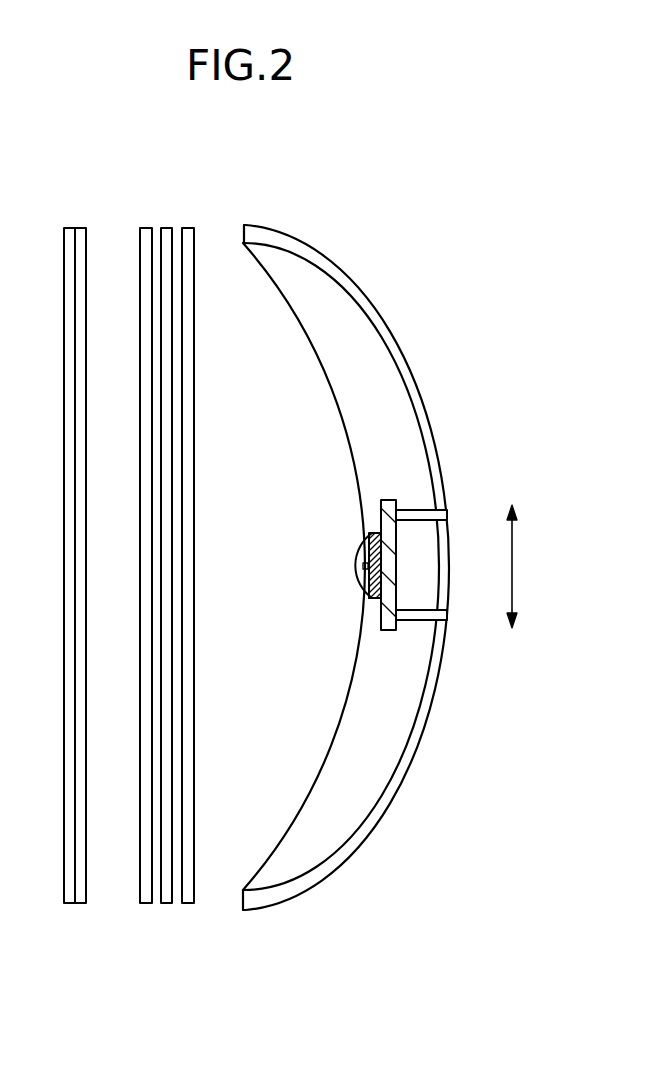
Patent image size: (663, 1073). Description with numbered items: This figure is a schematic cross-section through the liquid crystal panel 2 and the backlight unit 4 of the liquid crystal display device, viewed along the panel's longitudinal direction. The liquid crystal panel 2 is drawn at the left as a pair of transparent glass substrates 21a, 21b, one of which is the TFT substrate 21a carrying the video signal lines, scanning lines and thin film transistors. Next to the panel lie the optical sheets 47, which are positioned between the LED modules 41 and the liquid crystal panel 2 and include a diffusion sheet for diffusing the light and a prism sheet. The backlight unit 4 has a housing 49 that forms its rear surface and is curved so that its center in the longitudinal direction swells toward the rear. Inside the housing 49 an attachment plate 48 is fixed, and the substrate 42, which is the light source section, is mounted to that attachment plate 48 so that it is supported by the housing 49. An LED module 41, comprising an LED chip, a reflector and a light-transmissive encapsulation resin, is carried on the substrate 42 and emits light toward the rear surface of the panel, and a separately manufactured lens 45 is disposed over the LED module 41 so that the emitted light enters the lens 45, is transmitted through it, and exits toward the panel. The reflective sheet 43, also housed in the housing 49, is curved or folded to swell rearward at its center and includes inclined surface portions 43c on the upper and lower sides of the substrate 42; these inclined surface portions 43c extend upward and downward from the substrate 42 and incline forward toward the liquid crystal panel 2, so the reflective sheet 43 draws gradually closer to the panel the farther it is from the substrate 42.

The liquid crystal panel 2 is at (137, 163).
The TFT substrate 21a is at (82, 228).
The transparent substrate 21b is at (68, 228).
The optical sheets 47 is at (187, 228).
The backlight unit 4 is at (295, 227).
The housing 49 is at (377, 302).
The reflective sheet 43 is at (338, 422).
The inclined surface portions 43c is at (322, 368).
The attachment plate 48 is at (390, 499).
The lens 45 is at (363, 567).
The LED module 41 is at (357, 563).
The substrate 42 is at (371, 600).